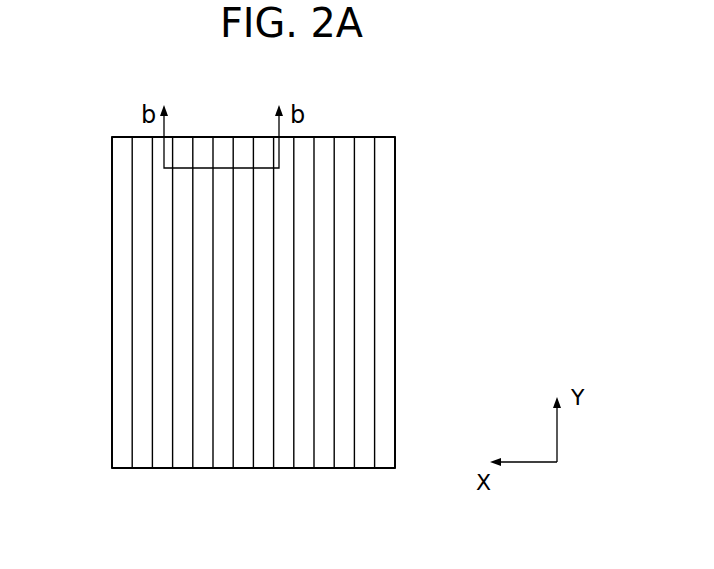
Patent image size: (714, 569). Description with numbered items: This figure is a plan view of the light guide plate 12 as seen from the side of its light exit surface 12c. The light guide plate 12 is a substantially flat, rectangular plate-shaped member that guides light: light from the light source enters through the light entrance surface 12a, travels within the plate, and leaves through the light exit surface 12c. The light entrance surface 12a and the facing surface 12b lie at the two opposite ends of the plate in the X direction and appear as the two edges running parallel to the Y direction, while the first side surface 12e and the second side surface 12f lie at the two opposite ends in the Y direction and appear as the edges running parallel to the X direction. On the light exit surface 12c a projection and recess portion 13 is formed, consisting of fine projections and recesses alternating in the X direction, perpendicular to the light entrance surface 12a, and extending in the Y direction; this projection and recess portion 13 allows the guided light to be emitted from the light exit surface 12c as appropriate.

The light guide plate 12 is at (416, 144).
The light entrance surface 12a is at (111, 290).
The facing surface 12b is at (392, 275).
The light exit surface 12c is at (347, 333).
The first side surface 12e is at (342, 470).
The second side surface 12f is at (362, 135).
The projection and recess portion 13 is at (352, 380).